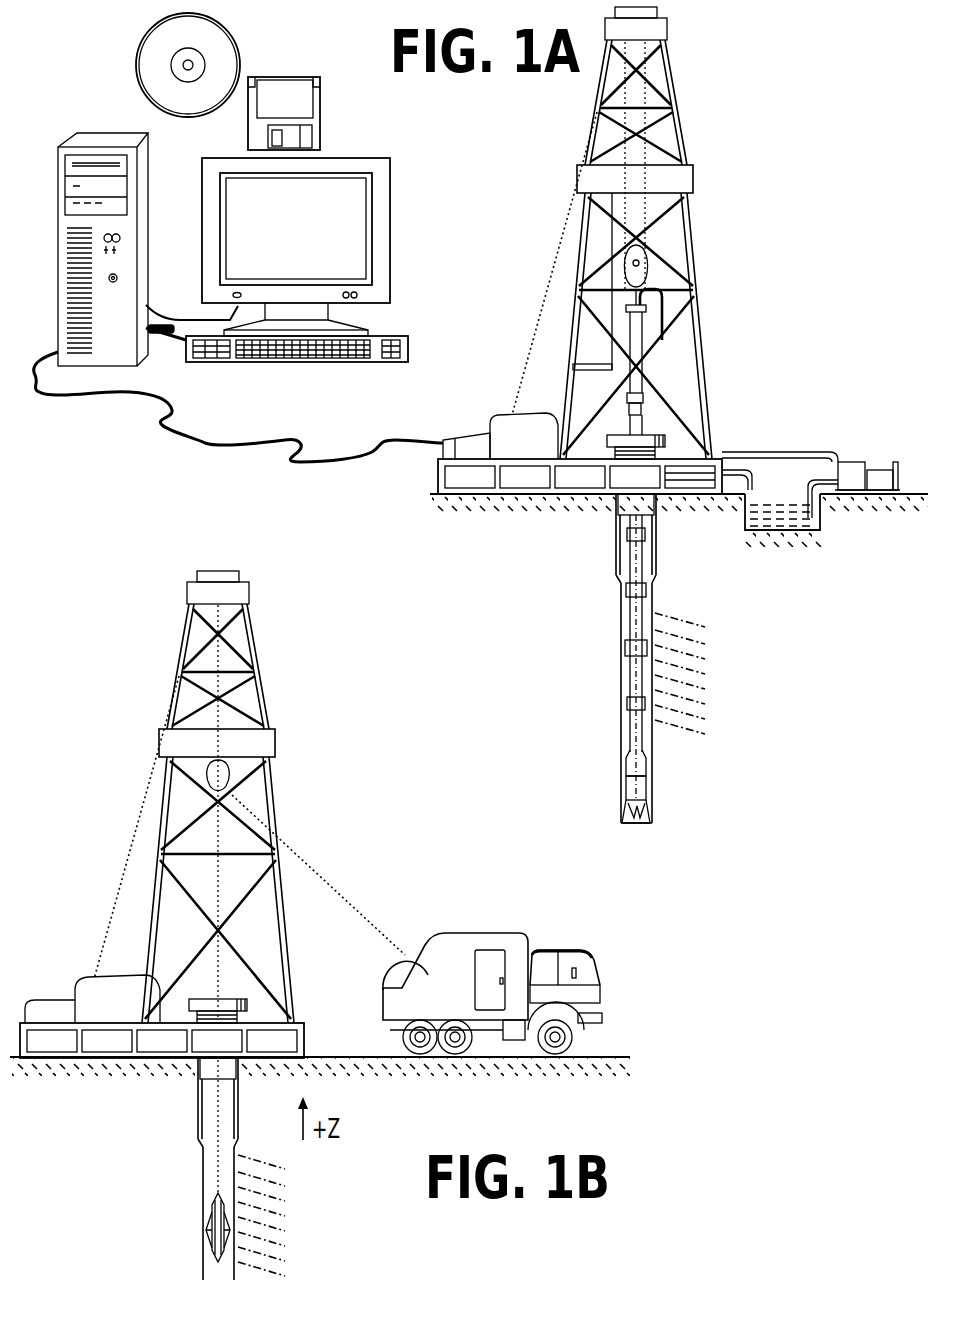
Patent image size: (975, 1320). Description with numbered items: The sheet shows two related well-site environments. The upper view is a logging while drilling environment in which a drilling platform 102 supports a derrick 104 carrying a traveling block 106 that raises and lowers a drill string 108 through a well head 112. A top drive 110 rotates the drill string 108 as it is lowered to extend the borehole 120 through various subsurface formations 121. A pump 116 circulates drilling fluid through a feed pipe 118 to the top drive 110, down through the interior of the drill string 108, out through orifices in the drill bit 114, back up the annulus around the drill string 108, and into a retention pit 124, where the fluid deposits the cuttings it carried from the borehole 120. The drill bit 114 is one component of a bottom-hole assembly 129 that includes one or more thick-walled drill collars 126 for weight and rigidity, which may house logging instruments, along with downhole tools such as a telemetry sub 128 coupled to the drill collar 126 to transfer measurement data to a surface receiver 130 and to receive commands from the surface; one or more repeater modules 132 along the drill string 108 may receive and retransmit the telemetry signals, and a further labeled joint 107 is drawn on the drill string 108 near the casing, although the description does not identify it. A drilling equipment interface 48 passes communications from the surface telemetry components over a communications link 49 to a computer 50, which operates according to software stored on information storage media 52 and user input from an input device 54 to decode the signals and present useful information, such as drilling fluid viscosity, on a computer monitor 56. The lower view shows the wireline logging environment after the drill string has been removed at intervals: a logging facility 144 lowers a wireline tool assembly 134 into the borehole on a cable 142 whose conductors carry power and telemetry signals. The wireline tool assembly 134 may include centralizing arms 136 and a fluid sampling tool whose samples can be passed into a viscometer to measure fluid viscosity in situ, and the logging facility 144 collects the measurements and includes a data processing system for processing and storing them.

In FIG. 1A, the drilling equipment interface 48 is at (449, 437).
In FIG. 1A, the communications link 49 is at (197, 437).
In FIG. 1A, the computer 50 is at (148, 272).
In FIG. 1A, the information storage media 52 is at (242, 63).
In FIG. 1A, the input device 54 is at (378, 361).
In FIG. 1A, the computer monitor 56 is at (375, 304).
In FIG. 1A, the drilling platform 102 is at (440, 465).
In FIG. 1B, the drilling platform 102 is at (303, 1028).
In FIG. 1A, the derrick 104 is at (680, 140).
In FIG. 1B, the derrick 104 is at (292, 987).
In FIG. 1A, the traveling block 106 is at (655, 258).
In FIG. 1B, the traveling block 106 is at (232, 772).
In FIG. 1A, the tool joint 107 is at (626, 590).
In FIG. 1A, the drill string 108 is at (641, 622).
In FIG. 1A, the top drive 110 is at (634, 330).
In FIG. 1A, the well head 112 is at (652, 434).
In FIG. 1B, the well head 112 is at (237, 996).
In FIG. 1A, the drill bit 114 is at (648, 820).
In FIG. 1A, the pump 116 is at (848, 466).
In FIG. 1A, the feed pipe 118 is at (795, 451).
In FIG. 1A, the borehole 120 is at (626, 640).
In FIG. 1A, the subsurface formations 121 is at (711, 632).
In FIG. 1B, the subsurface formations 121 is at (292, 1173).
In FIG. 1A, the retention pit 124 is at (760, 520).
In FIG. 1A, the drill collar 126 is at (627, 786).
In FIG. 1A, the telemetry sub 128 is at (628, 766).
In FIG. 1A, the bottom-hole assembly 129 is at (555, 752).
In FIG. 1A, the surface receiver 130 is at (641, 396).
In FIG. 1A, the repeater module 132 is at (627, 653).
In FIG. 1B, the wireline tool assembly 134 is at (215, 1215).
In FIG. 1B, the centralizing arms 136 is at (206, 1232).
In FIG. 1B, the cable 142 is at (296, 848).
In FIG. 1B, the logging facility 144 is at (452, 935).